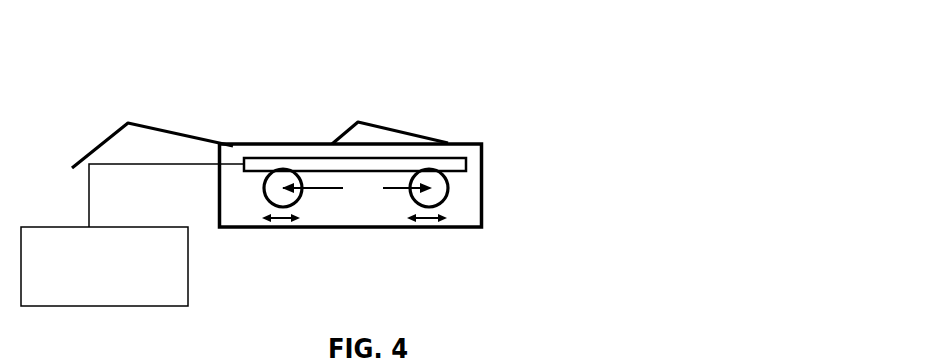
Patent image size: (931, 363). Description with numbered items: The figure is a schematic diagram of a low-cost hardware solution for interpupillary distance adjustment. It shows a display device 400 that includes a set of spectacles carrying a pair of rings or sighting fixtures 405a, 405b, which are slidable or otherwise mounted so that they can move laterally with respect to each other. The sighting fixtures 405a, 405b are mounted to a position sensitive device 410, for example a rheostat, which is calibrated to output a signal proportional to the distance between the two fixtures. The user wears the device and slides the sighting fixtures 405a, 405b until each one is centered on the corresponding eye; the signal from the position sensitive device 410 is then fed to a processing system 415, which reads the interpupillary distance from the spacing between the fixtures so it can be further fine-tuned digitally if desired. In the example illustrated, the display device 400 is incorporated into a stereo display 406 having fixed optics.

The display device 400 is at (125, 59).
The sighting fixture 405a is at (447, 190).
The sighting fixture 405b is at (256, 177).
The stereo display having fixed optics 406 is at (482, 228).
The position sensitive device 410 is at (440, 157).
The processing system 415 is at (188, 262).